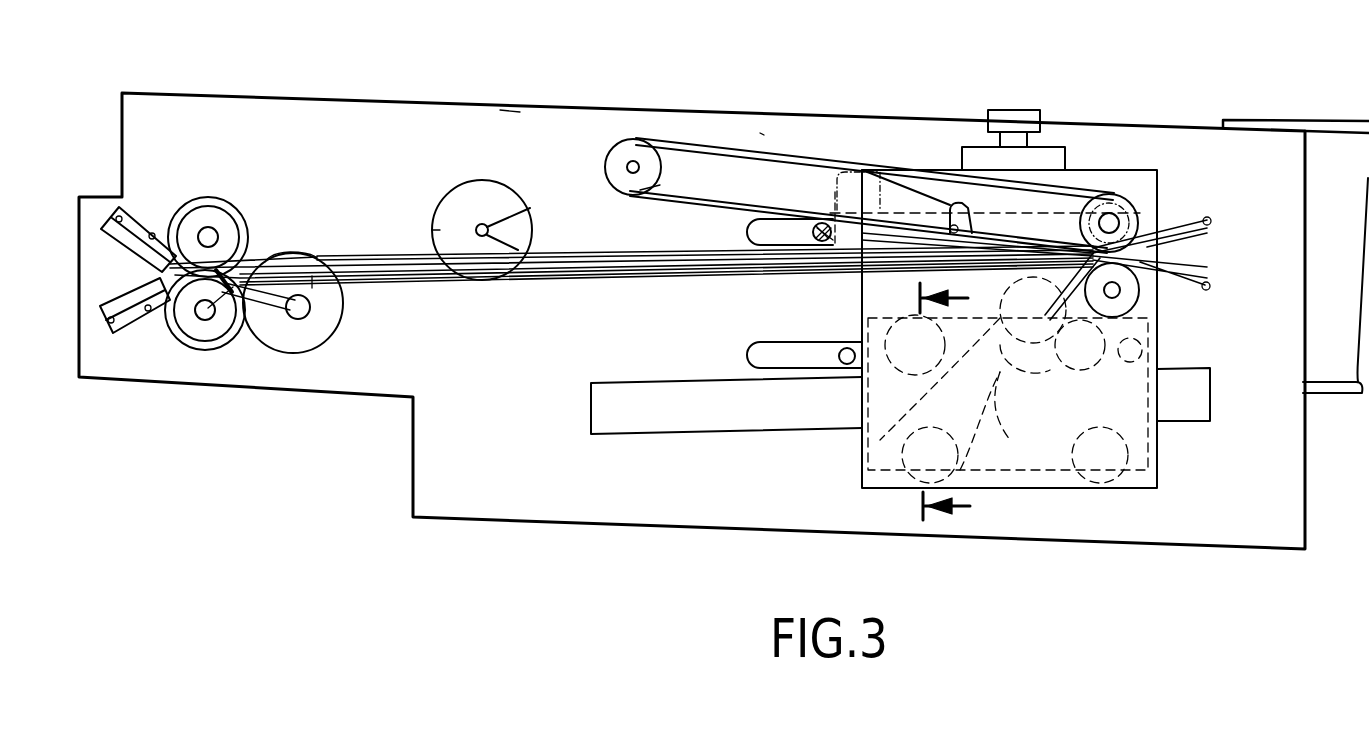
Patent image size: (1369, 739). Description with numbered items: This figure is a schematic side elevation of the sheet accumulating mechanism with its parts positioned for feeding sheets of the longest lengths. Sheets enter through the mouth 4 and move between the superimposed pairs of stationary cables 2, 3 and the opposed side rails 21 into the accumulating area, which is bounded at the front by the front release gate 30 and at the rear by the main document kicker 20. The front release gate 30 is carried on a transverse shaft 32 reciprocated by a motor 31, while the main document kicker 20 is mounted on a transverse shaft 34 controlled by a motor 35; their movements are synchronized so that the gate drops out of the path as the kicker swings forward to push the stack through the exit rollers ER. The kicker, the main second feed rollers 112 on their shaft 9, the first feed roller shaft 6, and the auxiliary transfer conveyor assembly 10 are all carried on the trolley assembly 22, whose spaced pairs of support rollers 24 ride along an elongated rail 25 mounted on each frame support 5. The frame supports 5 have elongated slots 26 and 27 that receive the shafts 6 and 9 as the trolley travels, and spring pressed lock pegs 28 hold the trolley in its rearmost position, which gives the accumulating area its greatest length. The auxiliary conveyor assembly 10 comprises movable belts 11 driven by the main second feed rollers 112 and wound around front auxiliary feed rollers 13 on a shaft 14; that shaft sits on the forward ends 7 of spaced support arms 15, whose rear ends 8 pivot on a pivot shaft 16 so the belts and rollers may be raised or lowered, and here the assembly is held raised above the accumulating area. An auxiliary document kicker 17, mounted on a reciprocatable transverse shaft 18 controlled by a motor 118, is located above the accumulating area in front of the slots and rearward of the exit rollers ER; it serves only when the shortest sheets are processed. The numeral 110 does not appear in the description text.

The exit rollers ER is at (213, 197).
The feed rollers 110 is at (238, 262).
The opposed side rails 21 is at (372, 258).
The motor 118 is at (470, 200).
The frame supports 5 is at (508, 112).
The reciprocatable transverse shaft 18 is at (481, 223).
The auxiliary document kicker 17 is at (533, 205).
The front auxiliary feed rollers 13 is at (633, 140).
The shaft 14 is at (638, 163).
The movable belts 11 is at (693, 147).
The auxiliary transfer conveyor assembly 10 is at (758, 138).
The support arms 15 is at (800, 182).
The rear ends of support arms 8 is at (880, 178).
The pivot shaft 16 is at (958, 205).
The lock pegs 28 is at (1012, 130).
The shaft 6 is at (1112, 218).
The trolley assembly 22 is at (1148, 165).
The main second feed rollers 112 is at (1140, 213).
The mouth 4 is at (1175, 240).
The main document kicker 20 is at (1147, 272).
The stationary cables 2 is at (560, 260).
The stationary cables 3 is at (545, 282).
The forward ends of support arms 7 is at (670, 180).
The elongated slot 26 is at (745, 228).
The elongated slot 27 is at (763, 350).
The transverse shaft 32 is at (310, 309).
The front release gate 30 is at (257, 347).
The motor 31 is at (318, 340).
The elongated rail 25 is at (643, 432).
The support rollers 24 is at (1160, 363).
The shaft 9 is at (1147, 297).
The transverse shaft 34 is at (1040, 355).
The motor 35 is at (1012, 430).